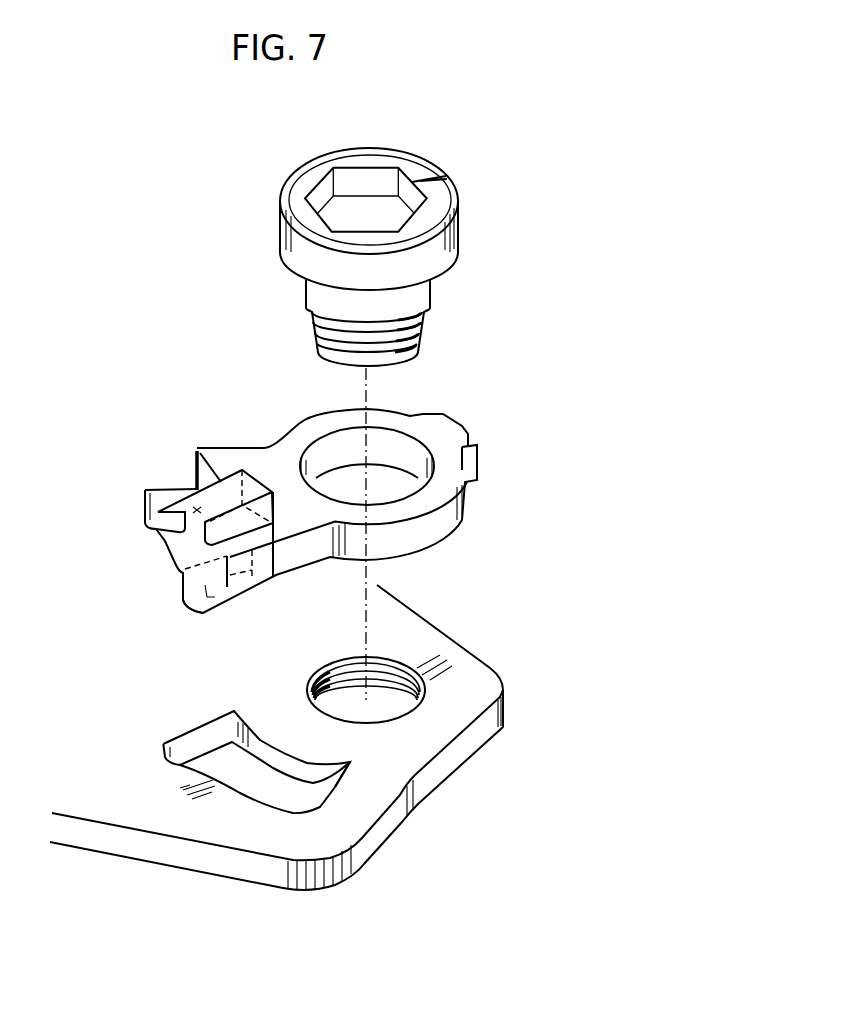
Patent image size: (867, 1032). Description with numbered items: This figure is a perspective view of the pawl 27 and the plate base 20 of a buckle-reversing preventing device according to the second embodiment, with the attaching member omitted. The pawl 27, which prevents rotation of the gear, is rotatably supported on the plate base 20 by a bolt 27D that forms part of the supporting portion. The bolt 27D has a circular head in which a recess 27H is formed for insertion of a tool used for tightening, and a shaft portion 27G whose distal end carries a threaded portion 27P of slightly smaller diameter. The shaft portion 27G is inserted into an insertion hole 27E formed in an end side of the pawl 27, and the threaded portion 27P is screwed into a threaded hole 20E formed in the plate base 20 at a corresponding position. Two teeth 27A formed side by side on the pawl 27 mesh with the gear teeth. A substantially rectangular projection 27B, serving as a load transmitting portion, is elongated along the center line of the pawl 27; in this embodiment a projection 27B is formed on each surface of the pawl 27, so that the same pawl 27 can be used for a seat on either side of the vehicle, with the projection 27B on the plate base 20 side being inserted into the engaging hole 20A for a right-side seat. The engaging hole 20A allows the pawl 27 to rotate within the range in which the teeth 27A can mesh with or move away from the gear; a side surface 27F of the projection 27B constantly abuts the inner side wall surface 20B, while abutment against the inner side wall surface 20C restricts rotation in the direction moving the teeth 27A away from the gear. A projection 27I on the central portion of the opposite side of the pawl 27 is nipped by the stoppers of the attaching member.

The plate base 20 is at (335, 905).
The engaging hole 20A is at (236, 769).
The inner side wall surface 20B is at (313, 767).
The inner side wall surface 20C is at (318, 795).
The threaded hole 20E is at (396, 679).
The pawl 27 is at (460, 546).
The teeth 27A is at (157, 488).
The projection 27B is at (150, 517).
The bolt 27D is at (474, 180).
The insertion hole 27E is at (320, 453).
The side surface 27F is at (273, 578).
The shaft portion 27G is at (417, 293).
The recess 27H is at (375, 176).
The projection 27I is at (477, 432).
The threaded portion 27P is at (407, 355).